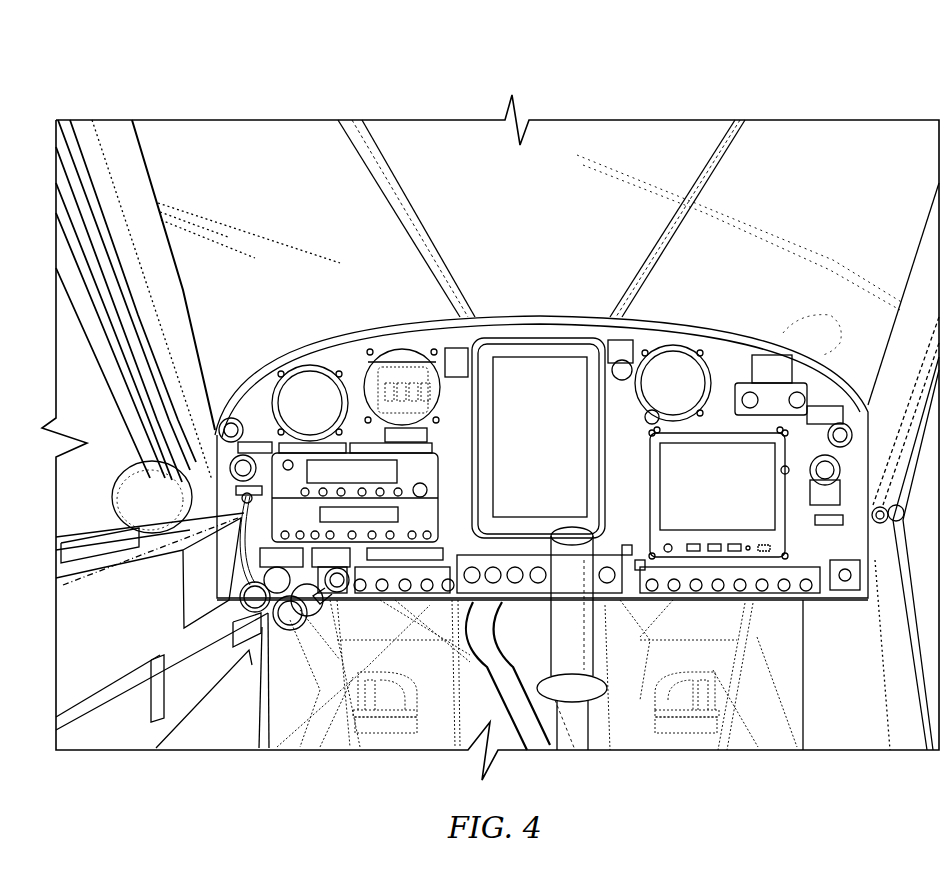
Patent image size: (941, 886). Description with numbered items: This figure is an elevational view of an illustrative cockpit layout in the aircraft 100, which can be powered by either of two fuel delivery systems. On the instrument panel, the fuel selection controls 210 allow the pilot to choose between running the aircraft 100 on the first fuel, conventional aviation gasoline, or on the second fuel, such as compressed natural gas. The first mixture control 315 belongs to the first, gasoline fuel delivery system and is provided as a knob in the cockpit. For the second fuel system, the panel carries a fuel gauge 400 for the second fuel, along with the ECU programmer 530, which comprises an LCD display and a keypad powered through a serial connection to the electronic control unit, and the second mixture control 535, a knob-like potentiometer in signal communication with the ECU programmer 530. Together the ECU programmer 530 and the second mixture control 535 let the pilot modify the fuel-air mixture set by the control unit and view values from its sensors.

The aircraft 100 is at (490, 401).
The fuel selection controls 210 is at (508, 560).
The first mixture control 315 is at (278, 635).
The fuel gauge 400 is at (443, 343).
The ECU programmer 530 is at (375, 347).
The second mixture control 535 is at (258, 446).